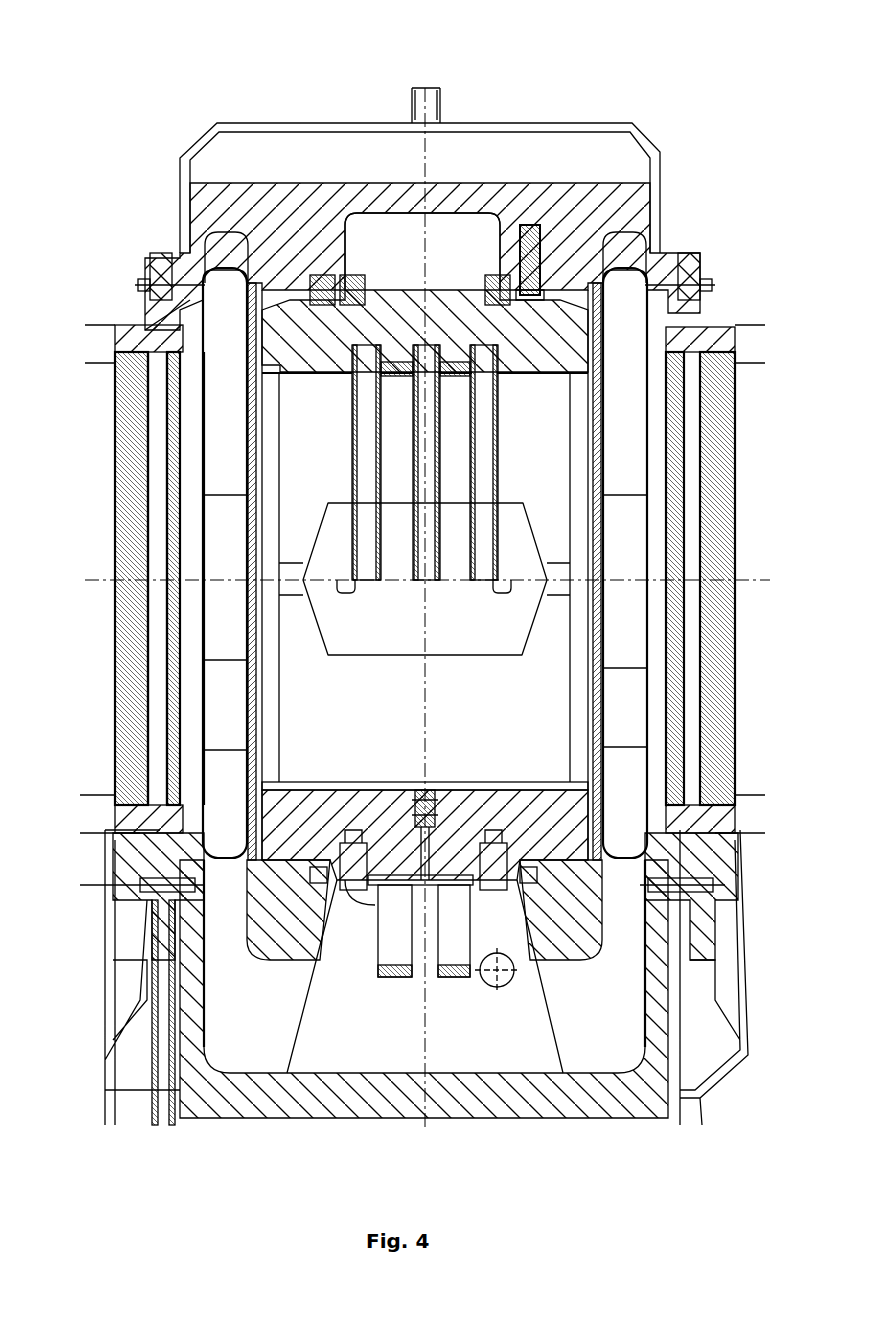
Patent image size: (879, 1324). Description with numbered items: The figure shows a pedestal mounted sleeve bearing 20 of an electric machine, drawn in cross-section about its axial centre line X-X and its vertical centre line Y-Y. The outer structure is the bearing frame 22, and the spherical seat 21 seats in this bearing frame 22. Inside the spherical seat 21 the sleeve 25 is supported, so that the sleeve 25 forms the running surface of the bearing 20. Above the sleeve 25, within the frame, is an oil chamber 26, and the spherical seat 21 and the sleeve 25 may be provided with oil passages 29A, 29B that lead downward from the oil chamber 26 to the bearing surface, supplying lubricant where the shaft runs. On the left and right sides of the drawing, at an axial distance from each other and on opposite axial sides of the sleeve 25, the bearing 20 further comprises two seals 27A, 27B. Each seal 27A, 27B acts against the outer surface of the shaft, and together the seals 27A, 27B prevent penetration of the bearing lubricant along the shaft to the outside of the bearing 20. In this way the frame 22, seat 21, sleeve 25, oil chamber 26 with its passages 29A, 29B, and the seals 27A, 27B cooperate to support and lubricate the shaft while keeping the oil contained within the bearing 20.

The bearing 20 is at (164, 67).
The spherical seat 21 is at (388, 290).
The bearing frame 22 is at (582, 195).
The sleeve 25 is at (308, 377).
The oil chamber 26 is at (422, 251).
The seal 27A is at (130, 335).
The seal 27B is at (722, 335).
The oil passage 29A is at (392, 378).
The oil passage 29B is at (463, 378).